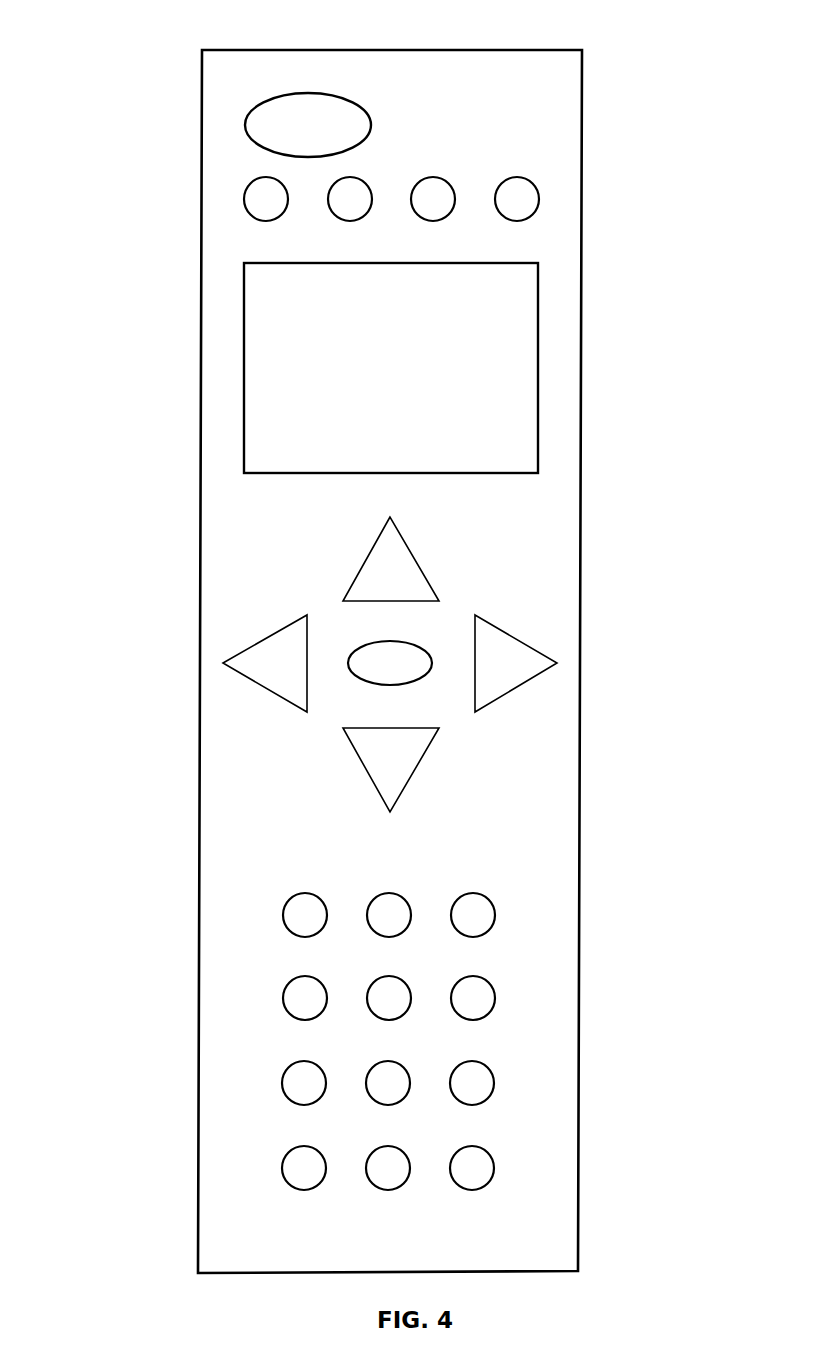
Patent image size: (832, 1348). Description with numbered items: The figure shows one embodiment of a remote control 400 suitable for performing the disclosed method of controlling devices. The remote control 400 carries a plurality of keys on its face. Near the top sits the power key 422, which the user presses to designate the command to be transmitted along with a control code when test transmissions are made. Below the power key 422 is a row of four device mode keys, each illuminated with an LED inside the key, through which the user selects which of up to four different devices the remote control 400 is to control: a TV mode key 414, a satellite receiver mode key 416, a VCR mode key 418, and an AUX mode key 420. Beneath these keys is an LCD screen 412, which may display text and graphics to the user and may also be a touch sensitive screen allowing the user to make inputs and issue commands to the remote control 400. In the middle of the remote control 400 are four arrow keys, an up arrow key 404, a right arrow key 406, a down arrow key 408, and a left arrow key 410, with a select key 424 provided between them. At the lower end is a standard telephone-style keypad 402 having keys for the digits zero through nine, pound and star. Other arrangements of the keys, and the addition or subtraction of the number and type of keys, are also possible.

The remote control 400 is at (652, 102).
The telephone-style keypad 402 is at (537, 917).
The up arrow key 404 is at (421, 565).
The right arrow key 406 is at (557, 663).
The down arrow key 408 is at (423, 755).
The left arrow key 410 is at (222, 665).
The LCD screen 412 is at (538, 368).
The TV mode key 414 is at (372, 196).
The satellite receiver mode key 416 is at (244, 200).
The VCR mode key 418 is at (457, 195).
The AUX mode key 420 is at (539, 199).
The power key 422 is at (310, 93).
The select key 424 is at (392, 659).